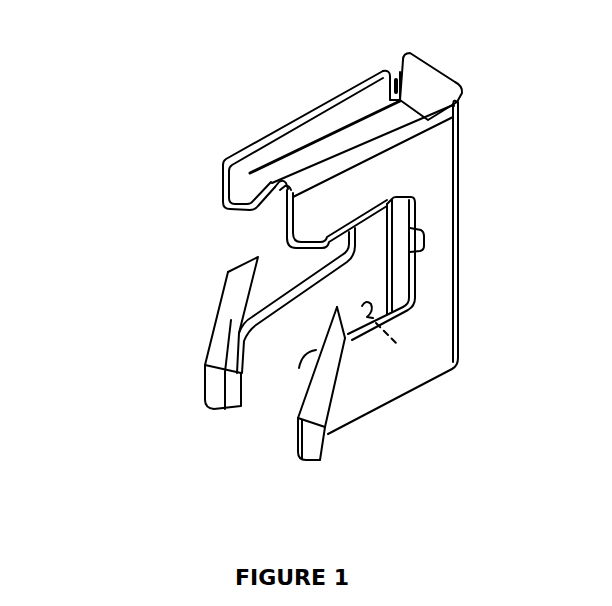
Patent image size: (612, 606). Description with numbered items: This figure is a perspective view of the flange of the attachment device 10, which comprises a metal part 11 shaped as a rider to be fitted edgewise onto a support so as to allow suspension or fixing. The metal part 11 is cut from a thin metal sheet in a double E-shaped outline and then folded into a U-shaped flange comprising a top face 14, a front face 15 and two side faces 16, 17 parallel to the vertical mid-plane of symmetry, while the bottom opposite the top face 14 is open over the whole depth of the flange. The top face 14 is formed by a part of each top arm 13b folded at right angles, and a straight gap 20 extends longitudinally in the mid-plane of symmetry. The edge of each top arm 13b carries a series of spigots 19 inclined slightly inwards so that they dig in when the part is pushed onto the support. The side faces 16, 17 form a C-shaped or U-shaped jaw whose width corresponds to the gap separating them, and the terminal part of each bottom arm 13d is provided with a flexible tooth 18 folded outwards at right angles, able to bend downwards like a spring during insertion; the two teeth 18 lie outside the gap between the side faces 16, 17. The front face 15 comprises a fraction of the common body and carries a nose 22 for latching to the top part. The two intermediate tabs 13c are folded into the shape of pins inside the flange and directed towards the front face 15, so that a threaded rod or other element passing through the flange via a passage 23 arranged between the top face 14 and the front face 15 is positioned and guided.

The attachment device 10 is at (123, 404).
The metal part 11 is at (473, 334).
The top arm 13b is at (313, 213).
The intermediate tab 13c is at (420, 243).
The bottom arm 13d is at (297, 312).
The top face 14 is at (347, 106).
The front face 15 is at (460, 163).
The side face 16 is at (307, 280).
The side face 17 is at (388, 386).
The flexible tooth 18 is at (325, 388).
The spigot 19 is at (358, 224).
The gap 20 is at (300, 148).
The nose 22 is at (425, 75).
The passage 23 is at (395, 80).